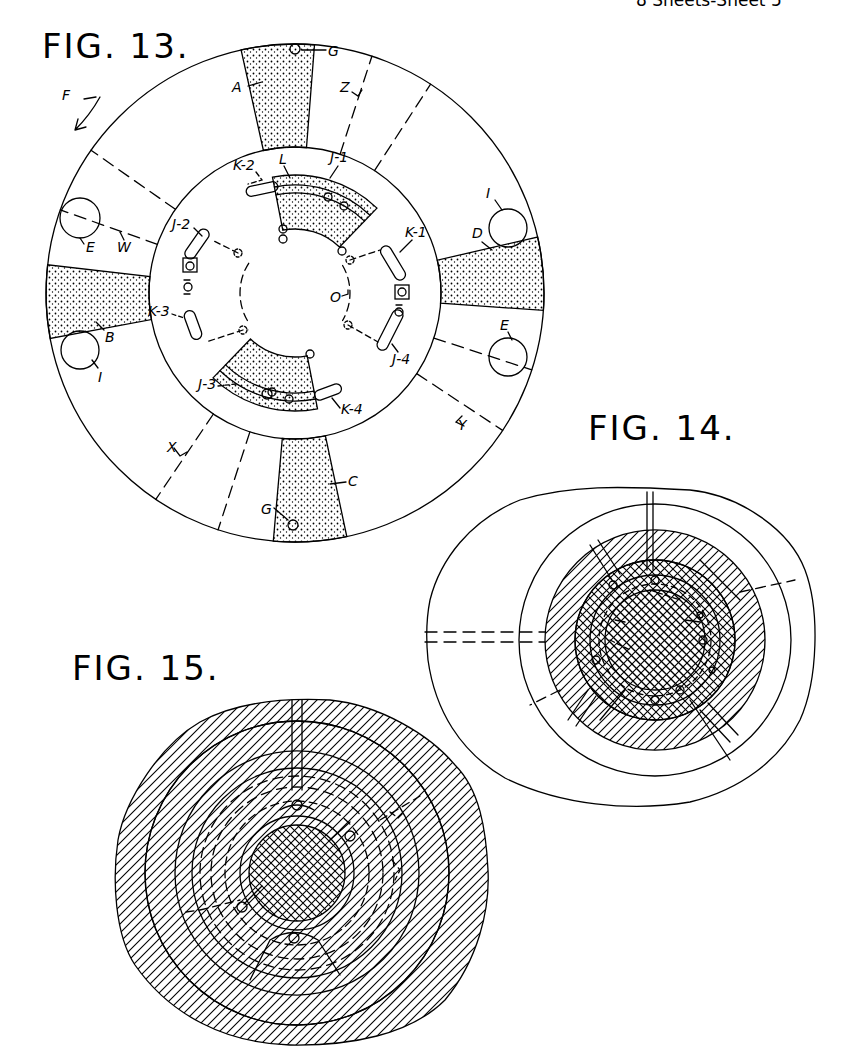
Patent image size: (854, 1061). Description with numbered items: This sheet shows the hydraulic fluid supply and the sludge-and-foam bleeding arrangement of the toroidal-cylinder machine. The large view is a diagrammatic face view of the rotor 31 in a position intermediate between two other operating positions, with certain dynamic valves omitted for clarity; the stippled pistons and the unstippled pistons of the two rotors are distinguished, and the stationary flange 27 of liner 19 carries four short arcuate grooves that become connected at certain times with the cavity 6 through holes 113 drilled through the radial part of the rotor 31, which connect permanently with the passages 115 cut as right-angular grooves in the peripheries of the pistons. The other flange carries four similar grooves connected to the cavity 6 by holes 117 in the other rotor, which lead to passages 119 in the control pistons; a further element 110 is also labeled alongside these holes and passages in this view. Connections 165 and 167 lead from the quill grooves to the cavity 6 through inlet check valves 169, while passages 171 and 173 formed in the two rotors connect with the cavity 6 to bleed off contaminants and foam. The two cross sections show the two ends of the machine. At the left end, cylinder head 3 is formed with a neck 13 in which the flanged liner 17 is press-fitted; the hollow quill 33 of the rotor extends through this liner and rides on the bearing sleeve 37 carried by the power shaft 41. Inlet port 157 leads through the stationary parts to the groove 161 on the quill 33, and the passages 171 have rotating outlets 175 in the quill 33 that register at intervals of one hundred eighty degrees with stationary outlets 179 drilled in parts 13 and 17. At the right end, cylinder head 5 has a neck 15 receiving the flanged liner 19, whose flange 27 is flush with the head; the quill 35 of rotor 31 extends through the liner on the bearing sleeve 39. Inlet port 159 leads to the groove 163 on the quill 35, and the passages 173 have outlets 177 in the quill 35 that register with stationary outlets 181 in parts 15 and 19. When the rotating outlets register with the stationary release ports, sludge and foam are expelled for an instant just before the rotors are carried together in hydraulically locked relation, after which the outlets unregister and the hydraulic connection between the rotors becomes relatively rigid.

In FIG. 13, the rotor 31 is at (232, 160).
In FIG. 13, the pin 110 is at (184, 268).
In FIG. 13, the holes 113 is at (316, 178).
In FIG. 13, the passages 115 is at (278, 180).
In FIG. 13, the holes 117 is at (182, 262).
In FIG. 13, the passages 119 is at (192, 246).
In FIG. 13, the connection 165 is at (250, 280).
In FIG. 14, the connection 165 is at (656, 627).
In FIG. 13, the connection 167 is at (283, 240).
In FIG. 14, the connection 167 is at (671, 624).
In FIG. 15, the connection 167 is at (292, 800).
In FIG. 14, the inlet check valves 169 is at (644, 644).
In FIG. 15, the inlet check valves 169 is at (290, 806).
In FIG. 13, the passages 171 is at (236, 248).
In FIG. 14, the passages 171 is at (677, 601).
In FIG. 13, the passages 173 is at (346, 260).
In FIG. 14, the passages 173 is at (651, 627).
In FIG. 15, the passages 173 is at (297, 863).
In FIG. 14, the cylinder head 3 is at (600, 504).
In FIG. 14, the neck 13 is at (592, 572).
In FIG. 14, the flanged liner 17 is at (582, 590).
In FIG. 14, the hollow quill 33 is at (666, 552).
In FIG. 14, the groove 161 is at (576, 626).
In FIG. 14, the hydraulic fluid inlet port 159 is at (646, 500).
In FIG. 15, the hydraulic fluid inlet port 159 is at (292, 712).
In FIG. 14, the hydraulic fluid inlet port 157 is at (496, 640).
In FIG. 14, the outlets 175 is at (604, 548).
In FIG. 14, the outlets 177 is at (718, 572).
In FIG. 15, the outlets 177 is at (344, 838).
In FIG. 14, the stationary outlets 181 is at (661, 643).
In FIG. 15, the stationary outlets 181 is at (290, 852).
In FIG. 14, the power shaft 41 is at (720, 662).
In FIG. 15, the power shaft 41 is at (344, 886).
In FIG. 14, the bearing sleeve 37 is at (620, 716).
In FIG. 14, the stationary outlets 179 is at (721, 731).
In FIG. 15, the cylinder head 5 is at (448, 806).
In FIG. 15, the flange 27 is at (440, 858).
In FIG. 15, the cavity 6 is at (214, 814).
In FIG. 15, the bearing sleeve 39 is at (245, 846).
In FIG. 15, the hollow quill 35 is at (372, 910).
In FIG. 15, the groove 163 is at (332, 930).
In FIG. 15, the neck 15 is at (400, 820).
In FIG. 15, the flanged liner 19 is at (398, 870).